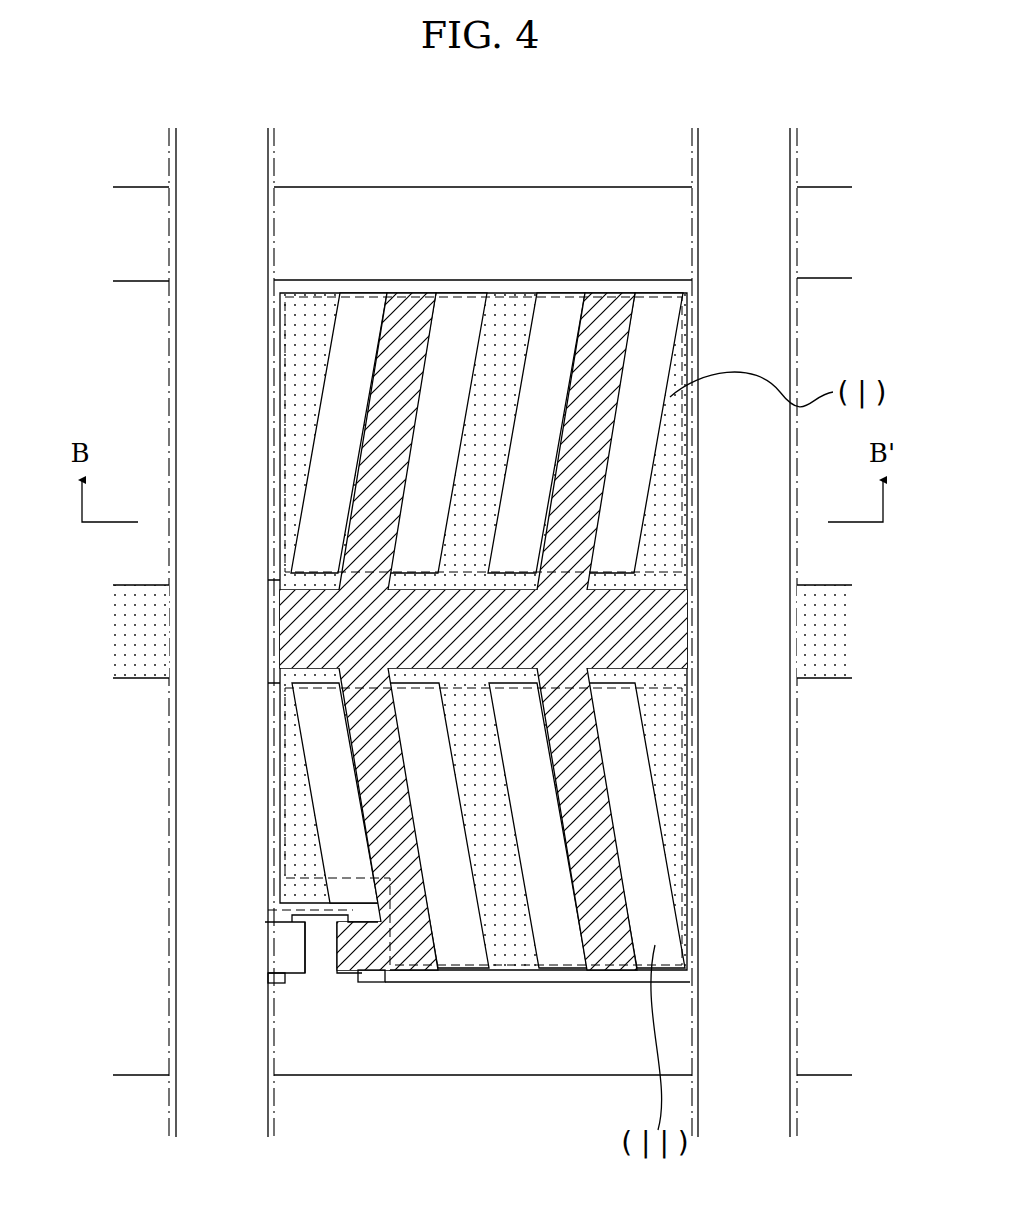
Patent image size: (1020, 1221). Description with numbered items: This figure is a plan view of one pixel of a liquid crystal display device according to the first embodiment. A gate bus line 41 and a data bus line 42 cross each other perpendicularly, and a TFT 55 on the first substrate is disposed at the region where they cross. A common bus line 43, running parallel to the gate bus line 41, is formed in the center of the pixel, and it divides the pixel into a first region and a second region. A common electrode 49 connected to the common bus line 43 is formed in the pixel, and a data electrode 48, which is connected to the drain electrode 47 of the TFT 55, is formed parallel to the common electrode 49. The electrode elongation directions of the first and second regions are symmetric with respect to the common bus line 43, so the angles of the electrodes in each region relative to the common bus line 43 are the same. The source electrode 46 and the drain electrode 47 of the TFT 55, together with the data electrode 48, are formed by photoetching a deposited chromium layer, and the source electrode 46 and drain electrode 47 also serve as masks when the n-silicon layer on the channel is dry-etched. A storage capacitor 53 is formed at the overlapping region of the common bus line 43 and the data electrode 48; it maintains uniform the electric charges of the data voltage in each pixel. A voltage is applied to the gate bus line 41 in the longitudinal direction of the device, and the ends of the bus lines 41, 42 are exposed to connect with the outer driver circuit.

The gate bus line 41 is at (600, 212).
The data bus line 42 is at (178, 840).
The common bus line 43 is at (100, 585).
The source electrode 46 is at (282, 937).
The drain electrode 47 is at (372, 945).
The data electrode 48 is at (408, 316).
The common electrode 49 is at (507, 317).
The storage capacitor 53 is at (308, 640).
The TFT 55 is at (318, 972).